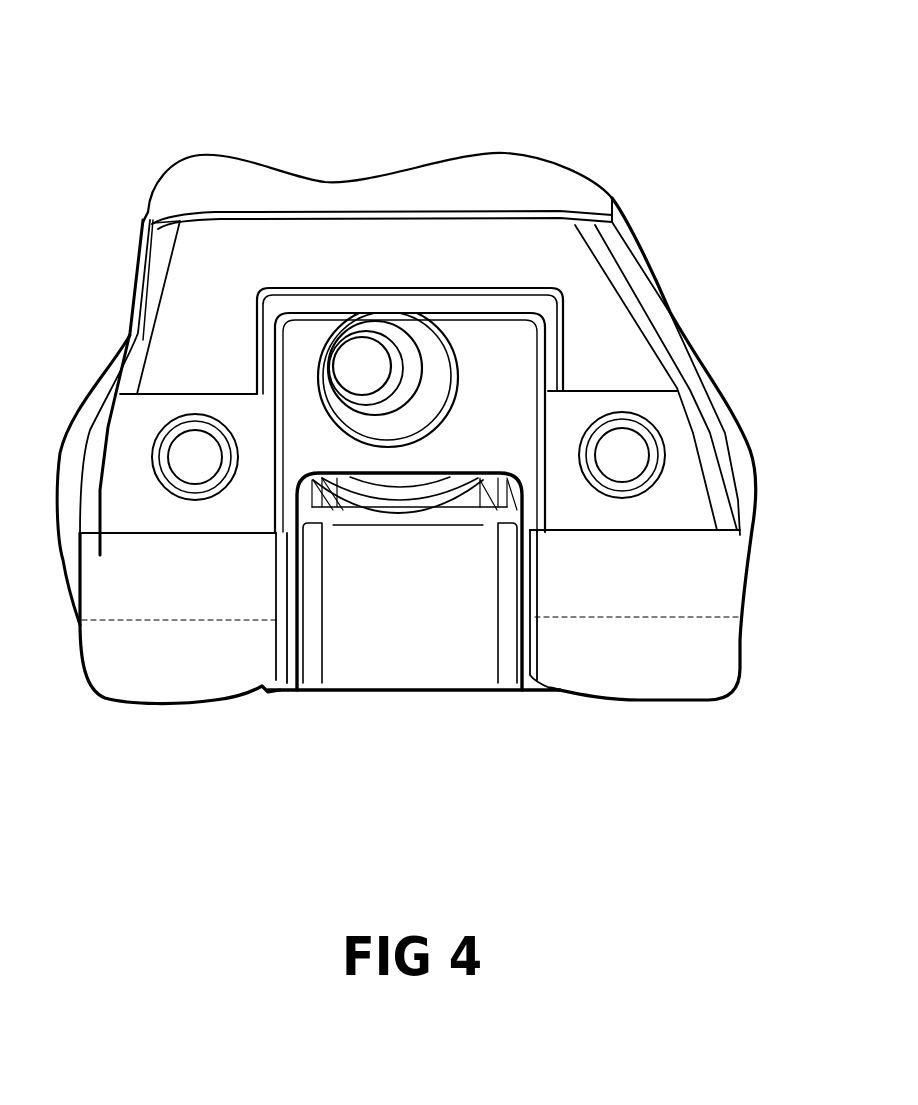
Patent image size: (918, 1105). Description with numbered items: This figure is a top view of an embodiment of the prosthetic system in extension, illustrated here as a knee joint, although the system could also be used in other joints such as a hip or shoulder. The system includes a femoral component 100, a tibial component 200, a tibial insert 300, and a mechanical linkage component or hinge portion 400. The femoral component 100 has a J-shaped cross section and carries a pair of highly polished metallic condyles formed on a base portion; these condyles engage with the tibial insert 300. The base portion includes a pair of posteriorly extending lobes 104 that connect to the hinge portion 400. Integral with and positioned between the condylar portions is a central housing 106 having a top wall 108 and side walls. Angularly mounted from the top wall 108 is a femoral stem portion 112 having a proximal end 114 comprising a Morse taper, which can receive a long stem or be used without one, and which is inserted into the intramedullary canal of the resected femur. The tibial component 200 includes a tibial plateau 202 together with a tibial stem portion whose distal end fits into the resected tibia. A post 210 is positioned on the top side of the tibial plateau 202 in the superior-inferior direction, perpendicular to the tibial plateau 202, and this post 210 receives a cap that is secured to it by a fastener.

The femoral component 100 is at (120, 105).
The posteriorly extending lobes 104 is at (178, 688).
The central housing 106 is at (443, 237).
The top wall 108 is at (503, 343).
The femoral stem portion 112 is at (370, 317).
The proximal end 114 is at (357, 360).
The tibial component 200 is at (760, 475).
The tibial plateau 202 is at (747, 517).
The post 210 is at (392, 498).
The tibial insert 300 is at (708, 402).
The hinge portion 400 is at (422, 665).